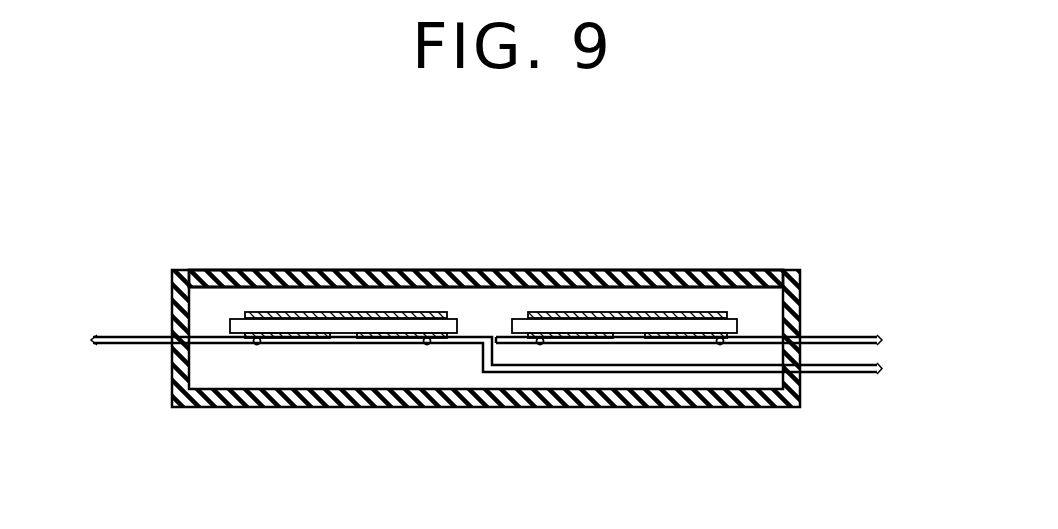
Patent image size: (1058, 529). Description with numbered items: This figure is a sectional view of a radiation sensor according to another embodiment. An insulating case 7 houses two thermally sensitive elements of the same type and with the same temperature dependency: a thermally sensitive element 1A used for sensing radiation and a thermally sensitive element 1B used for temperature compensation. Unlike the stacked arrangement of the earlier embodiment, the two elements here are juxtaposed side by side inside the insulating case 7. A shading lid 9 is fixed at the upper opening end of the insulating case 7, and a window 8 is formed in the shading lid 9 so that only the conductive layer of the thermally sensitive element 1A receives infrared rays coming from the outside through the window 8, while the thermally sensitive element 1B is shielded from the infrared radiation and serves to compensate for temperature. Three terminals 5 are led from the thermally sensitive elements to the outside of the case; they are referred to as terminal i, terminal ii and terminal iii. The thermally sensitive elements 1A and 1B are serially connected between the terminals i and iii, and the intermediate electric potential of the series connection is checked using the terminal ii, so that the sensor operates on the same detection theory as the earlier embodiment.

The thermally sensitive element 1A is at (238, 312).
The thermally sensitive element 1B is at (750, 308).
The terminals 5 is at (140, 347).
The insulating case 7 is at (463, 398).
The window 8 is at (317, 278).
The shading lid 9 is at (565, 278).
The terminal 5- i is at (78, 338).
The terminal 5- ii is at (899, 378).
The terminal 5- iii is at (904, 335).